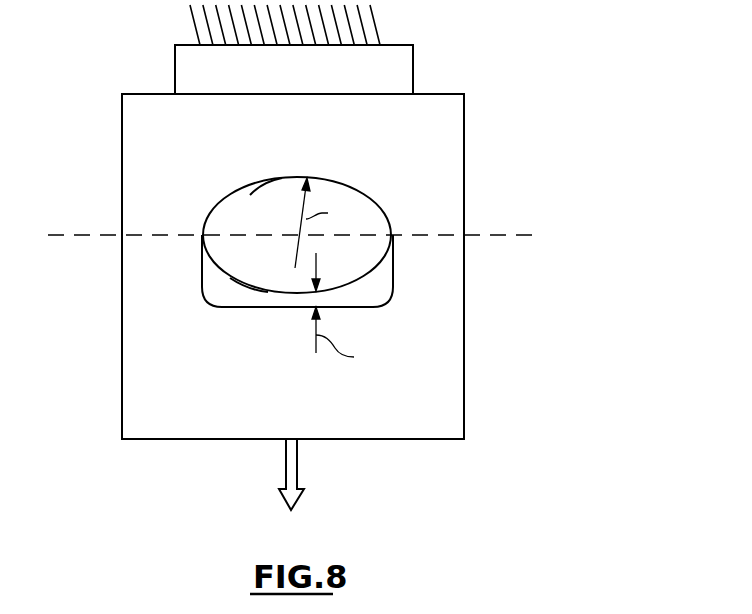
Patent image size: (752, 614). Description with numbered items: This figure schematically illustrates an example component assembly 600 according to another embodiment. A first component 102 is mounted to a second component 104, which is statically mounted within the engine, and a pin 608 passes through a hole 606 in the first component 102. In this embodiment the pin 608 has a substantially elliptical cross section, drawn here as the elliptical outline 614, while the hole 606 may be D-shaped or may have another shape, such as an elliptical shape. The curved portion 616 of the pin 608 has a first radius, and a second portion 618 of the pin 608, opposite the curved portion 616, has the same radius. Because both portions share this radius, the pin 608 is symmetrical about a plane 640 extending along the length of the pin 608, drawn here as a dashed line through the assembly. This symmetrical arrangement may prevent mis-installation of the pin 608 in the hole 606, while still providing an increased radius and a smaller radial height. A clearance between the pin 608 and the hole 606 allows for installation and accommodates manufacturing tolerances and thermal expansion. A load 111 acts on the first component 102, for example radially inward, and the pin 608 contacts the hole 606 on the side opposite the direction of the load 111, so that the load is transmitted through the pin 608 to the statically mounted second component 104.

The component assembly 600 is at (563, 60).
The first component 102 is at (450, 120).
The second component 104 is at (397, 66).
The plane 640 is at (77, 237).
The ball / rolling element 614 is at (345, 184).
The curved portion 616 is at (278, 178).
The second portion 618 is at (247, 283).
The hole 606 is at (393, 253).
The pin 608 is at (350, 255).
The load 111 is at (298, 500).